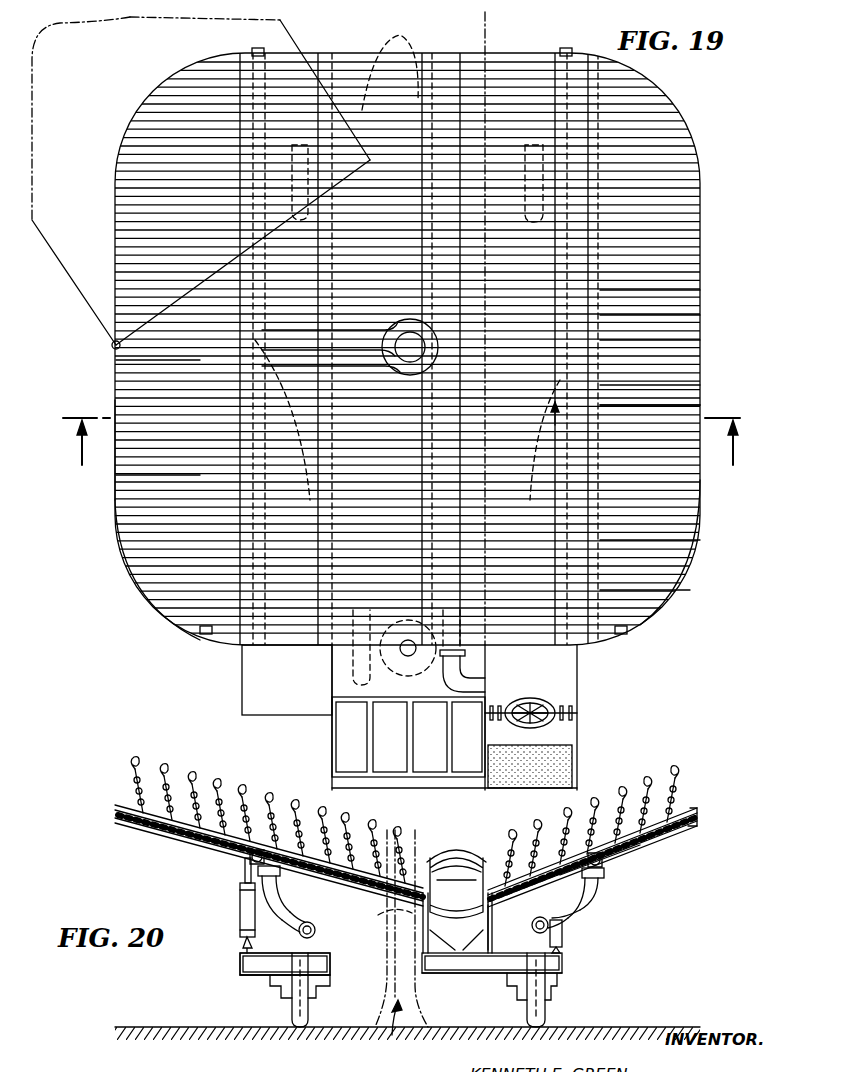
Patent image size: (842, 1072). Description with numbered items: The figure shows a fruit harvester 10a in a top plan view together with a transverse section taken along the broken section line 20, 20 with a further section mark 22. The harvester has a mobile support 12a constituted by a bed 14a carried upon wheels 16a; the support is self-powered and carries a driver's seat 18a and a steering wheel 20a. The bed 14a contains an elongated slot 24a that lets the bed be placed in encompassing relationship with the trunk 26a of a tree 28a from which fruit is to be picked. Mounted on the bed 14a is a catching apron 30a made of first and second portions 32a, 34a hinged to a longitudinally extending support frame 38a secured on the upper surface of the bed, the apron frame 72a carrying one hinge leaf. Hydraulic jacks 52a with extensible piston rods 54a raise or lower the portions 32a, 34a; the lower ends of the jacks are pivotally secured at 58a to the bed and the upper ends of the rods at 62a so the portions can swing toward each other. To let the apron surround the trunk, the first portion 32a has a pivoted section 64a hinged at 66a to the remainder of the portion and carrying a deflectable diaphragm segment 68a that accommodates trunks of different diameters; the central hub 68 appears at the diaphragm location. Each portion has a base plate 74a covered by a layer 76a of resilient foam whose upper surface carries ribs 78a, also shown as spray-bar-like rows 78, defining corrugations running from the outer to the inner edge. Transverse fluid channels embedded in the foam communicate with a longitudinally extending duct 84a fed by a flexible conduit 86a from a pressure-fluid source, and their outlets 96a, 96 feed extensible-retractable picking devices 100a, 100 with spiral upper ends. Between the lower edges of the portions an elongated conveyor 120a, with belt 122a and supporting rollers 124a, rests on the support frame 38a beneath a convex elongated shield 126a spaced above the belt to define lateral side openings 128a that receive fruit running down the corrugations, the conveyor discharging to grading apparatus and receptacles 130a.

In FIG. 19, the fruit harvester 10a is at (126, 568).
In FIG. 20, the fruit harvester 10a is at (570, 975).
In FIG. 19, the mobile support 12a is at (242, 660).
In FIG. 20, the mobile support 12a is at (565, 962).
In FIG. 19, the bed 14a is at (577, 665).
In FIG. 20, the bed 14a is at (240, 960).
In FIG. 19, the wheels 16a is at (335, 60).
In FIG. 20, the wheels 16a is at (298, 1000).
In FIG. 19, the driver's seat 18a is at (555, 760).
In FIG. 19, the steering wheel 20a is at (555, 705).
In FIG. 19, the section line 20— 20 is at (401, 452).
In FIG. 19, the section line 22 is at (722, 428).
In FIG. 19, the elongated slot 24a is at (482, 48).
In FIG. 20, the elongated slot 24a is at (360, 972).
In FIG. 20, the trunk 26a is at (380, 915).
In FIG. 20, the tree 28a is at (392, 1035).
In FIG. 19, the catching apron 30a is at (175, 625).
In FIG. 20, the catching apron 30a is at (685, 835).
In FIG. 19, the first portion of apron 32a is at (116, 520).
In FIG. 20, the first portion of apron 32a is at (200, 835).
In FIG. 19, the second portion of apron 34a is at (700, 560).
In FIG. 20, the second portion of apron 34a is at (660, 845).
In FIG. 20, the support frame 38a is at (492, 930).
In FIG. 19, the hydraulic jacks 52a is at (258, 50).
In FIG. 20, the hydraulic jacks 52a is at (240, 900).
In FIG. 20, the piston rods 54a is at (245, 872).
In FIG. 20, the pivotal connection of jack to bed 58a is at (243, 946).
In FIG. 20, the pivotal connection of piston rod 62a is at (250, 856).
In FIG. 19, the pivoted section 64a is at (65, 255).
In FIG. 19, the hinge connection of pivoted section 66a is at (116, 345).
In FIG. 19, the diaphragm segment 68a is at (392, 60).
In FIG. 19, the central hub 68 is at (410, 347).
In FIG. 20, the apron frame 72a is at (152, 830).
In FIG. 20, the base plate 74a is at (282, 878).
In FIG. 19, the layer of resilient material 76a is at (655, 590).
In FIG. 20, the layer of resilient material 76a is at (695, 808).
In FIG. 19, the spray bar 78 is at (700, 290).
In FIG. 19, the ribs 78a is at (700, 540).
In FIG. 19, the longitudinally extending duct 84a is at (270, 340).
In FIG. 20, the longitudinally extending duct 84a is at (282, 878).
In FIG. 19, the flexible conduit 86a is at (330, 420).
In FIG. 20, the flexible conduit 86a is at (290, 902).
In FIG. 19, the conduit 96 is at (700, 315).
In FIG. 19, the outlets 96a is at (125, 372).
In FIG. 19, the nozzle bar 100 is at (700, 340).
In FIG. 19, the extensible-retractable picking devices 100a is at (122, 476).
In FIG. 20, the elongated conveyor 120a is at (458, 920).
In FIG. 20, the conveyor belt 122a is at (468, 880).
In FIG. 20, the supporting rollers 124a is at (458, 893).
In FIG. 19, the elongated shield 126a is at (480, 620).
In FIG. 20, the elongated shield 126a is at (438, 850).
In FIG. 20, the lateral side openings 128a is at (425, 870).
In FIG. 19, the receptacles 130a is at (332, 728).